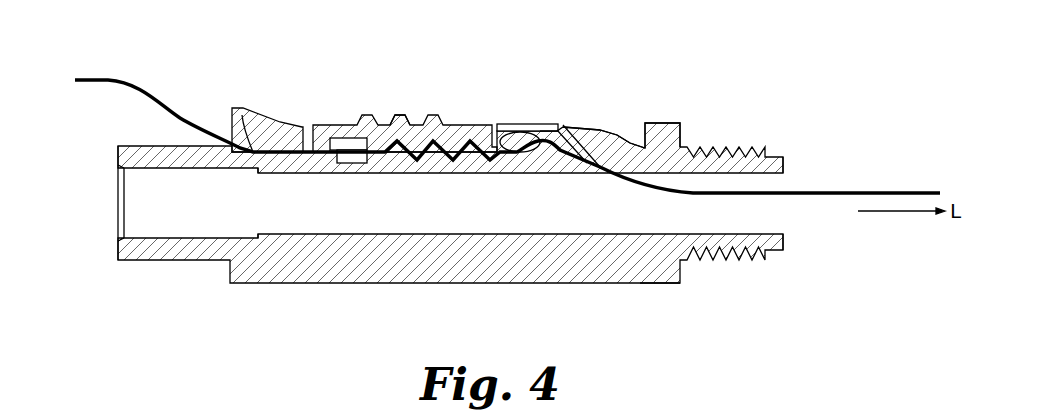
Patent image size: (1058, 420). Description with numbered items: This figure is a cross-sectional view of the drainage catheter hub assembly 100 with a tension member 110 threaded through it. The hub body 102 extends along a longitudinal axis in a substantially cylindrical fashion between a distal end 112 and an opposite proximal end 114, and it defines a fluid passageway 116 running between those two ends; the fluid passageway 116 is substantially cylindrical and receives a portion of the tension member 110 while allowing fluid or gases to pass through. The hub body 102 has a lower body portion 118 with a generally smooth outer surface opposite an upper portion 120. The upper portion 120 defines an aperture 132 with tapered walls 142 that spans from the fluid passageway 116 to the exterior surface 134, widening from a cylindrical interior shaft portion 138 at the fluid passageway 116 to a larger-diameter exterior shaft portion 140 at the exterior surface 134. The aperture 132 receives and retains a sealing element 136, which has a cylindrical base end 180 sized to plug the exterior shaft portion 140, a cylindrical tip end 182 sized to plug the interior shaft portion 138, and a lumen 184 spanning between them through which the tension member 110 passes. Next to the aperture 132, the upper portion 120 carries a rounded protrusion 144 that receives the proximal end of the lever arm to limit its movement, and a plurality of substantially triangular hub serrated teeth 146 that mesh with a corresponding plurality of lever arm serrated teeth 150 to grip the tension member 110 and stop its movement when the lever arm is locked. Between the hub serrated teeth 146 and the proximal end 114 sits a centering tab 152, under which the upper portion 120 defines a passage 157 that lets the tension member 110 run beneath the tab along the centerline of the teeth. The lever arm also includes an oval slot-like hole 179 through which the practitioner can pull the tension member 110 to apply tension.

The drainage catheter hub assembly 100 is at (346, 60).
The hub body 102 is at (322, 296).
The tension member 110 is at (169, 119).
The distal end 112 is at (810, 256).
The proximal end 114 is at (178, 272).
The fluid passageway 116 is at (140, 202).
The lower body portion 118 is at (640, 268).
The upper portion 120 is at (448, 167).
The aperture 132 is at (546, 133).
The exterior surface 134 is at (602, 130).
The sealing element 136 is at (556, 172).
The cylindrical interior shaft portion 138 is at (626, 171).
The exterior shaft portion 140 is at (533, 148).
The tapered walls 142 is at (583, 131).
The protrusion 144 is at (626, 126).
The hub serrated teeth 146 is at (395, 160).
The lever arm serrated teeth 150 is at (420, 147).
The centering tab 152 is at (333, 137).
The passage 157 is at (292, 125).
The hole 179 is at (510, 126).
The base end 180 is at (541, 136).
The tip end 182 is at (580, 158).
The lumen 184 is at (553, 150).